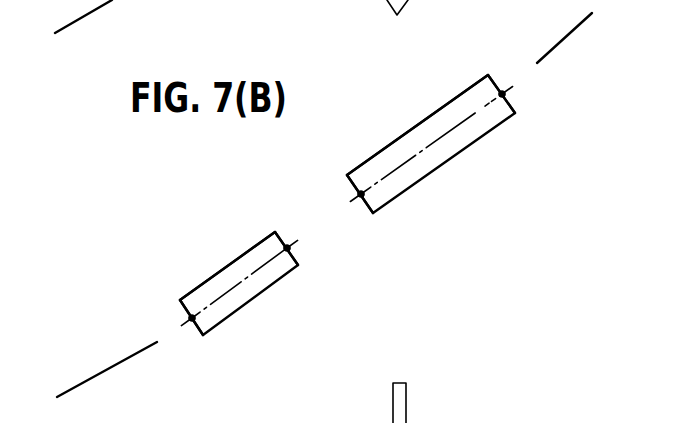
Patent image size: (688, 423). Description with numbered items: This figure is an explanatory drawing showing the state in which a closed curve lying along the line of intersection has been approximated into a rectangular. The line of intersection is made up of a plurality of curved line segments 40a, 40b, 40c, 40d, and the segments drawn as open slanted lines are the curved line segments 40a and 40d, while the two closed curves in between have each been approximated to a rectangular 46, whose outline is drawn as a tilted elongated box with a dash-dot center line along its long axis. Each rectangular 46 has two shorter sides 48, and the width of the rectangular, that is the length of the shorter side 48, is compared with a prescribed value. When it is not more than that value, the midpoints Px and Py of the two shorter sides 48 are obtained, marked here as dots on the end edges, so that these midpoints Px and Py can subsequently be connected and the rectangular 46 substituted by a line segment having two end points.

The curved line segment 40a is at (563, 42).
The curved line segment 40b is at (445, 163).
The curved line segment 40c is at (255, 305).
The curved line segment 40d is at (108, 364).
The rectangular 46 is at (420, 125).
The shorter side 48 is at (512, 107).
The midpoint Px is at (502, 91).
The midpoint Py is at (358, 194).